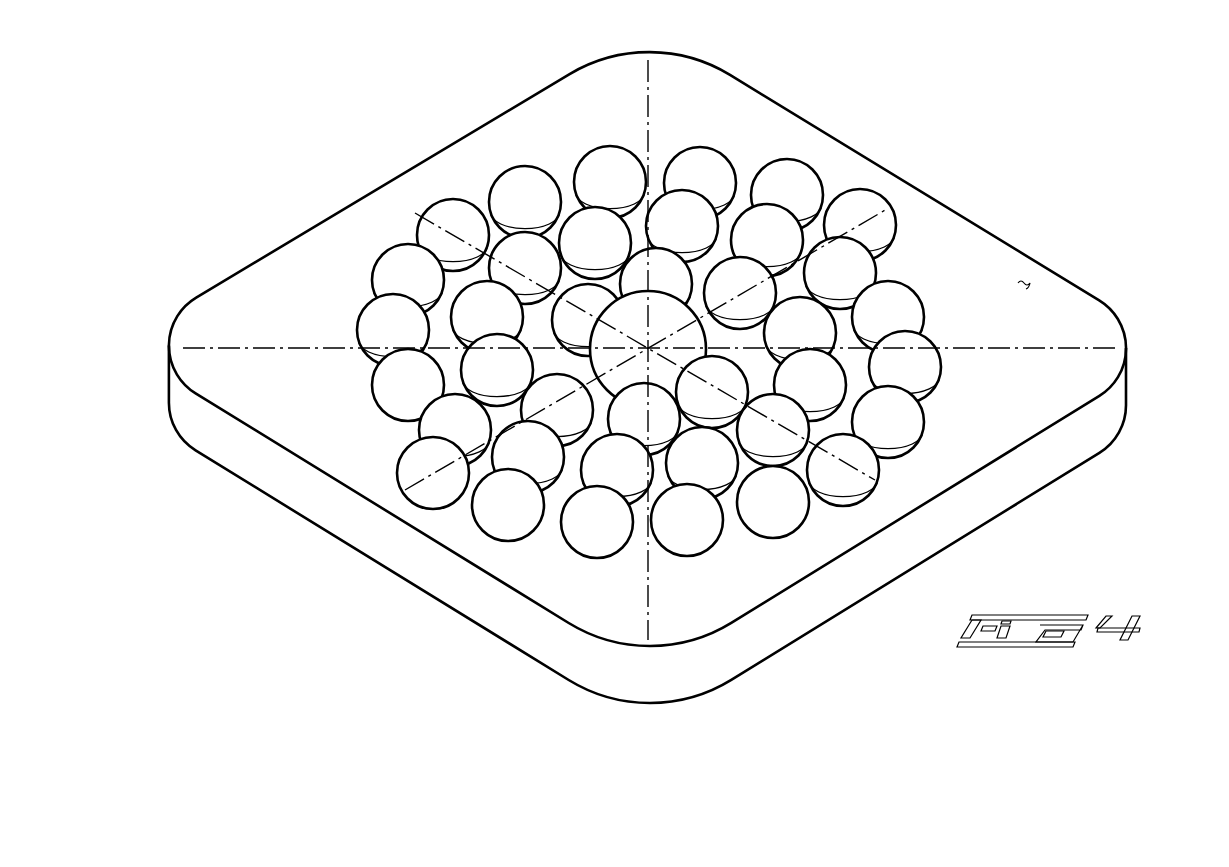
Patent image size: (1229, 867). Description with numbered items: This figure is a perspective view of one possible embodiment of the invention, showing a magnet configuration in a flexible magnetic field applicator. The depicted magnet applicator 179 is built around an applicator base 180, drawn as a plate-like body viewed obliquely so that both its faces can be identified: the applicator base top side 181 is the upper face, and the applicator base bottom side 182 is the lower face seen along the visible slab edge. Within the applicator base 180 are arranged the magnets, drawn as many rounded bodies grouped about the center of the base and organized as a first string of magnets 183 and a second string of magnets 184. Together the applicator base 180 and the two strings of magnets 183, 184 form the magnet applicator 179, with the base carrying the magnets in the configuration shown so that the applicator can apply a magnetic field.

The magnet applicator 179 is at (693, 379).
The applicator base 180 is at (647, 349).
The applicator base top side 181 is at (1086, 250).
The applicator base bottom side 182 is at (693, 524).
The first string of magnets 183 is at (640, 204).
The second string of magnets 184 is at (640, 533).